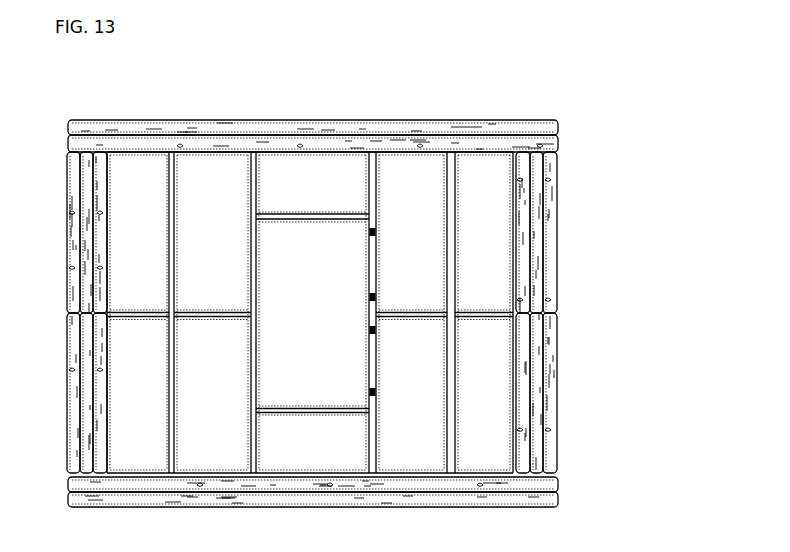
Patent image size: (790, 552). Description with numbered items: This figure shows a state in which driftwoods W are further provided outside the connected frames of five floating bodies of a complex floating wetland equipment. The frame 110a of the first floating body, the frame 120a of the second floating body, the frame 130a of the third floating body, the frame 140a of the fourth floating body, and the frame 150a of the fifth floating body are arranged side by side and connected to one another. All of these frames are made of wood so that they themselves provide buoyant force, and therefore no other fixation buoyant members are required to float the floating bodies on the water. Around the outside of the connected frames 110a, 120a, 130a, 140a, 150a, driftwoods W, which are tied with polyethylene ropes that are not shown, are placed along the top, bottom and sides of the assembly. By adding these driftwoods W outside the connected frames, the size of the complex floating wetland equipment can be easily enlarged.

The frame of the first floating body 110a is at (141, 152).
The frame of the second floating body 120a is at (213, 152).
The frame of the third floating body 130a is at (313, 152).
The frame of the fourth floating body 140a is at (410, 152).
The frame of the fifth floating body 150a is at (480, 152).
The driftwoods W is at (622, 481).